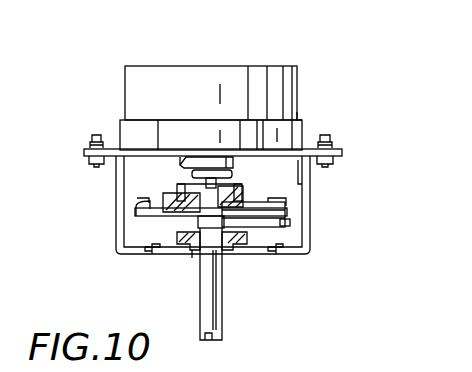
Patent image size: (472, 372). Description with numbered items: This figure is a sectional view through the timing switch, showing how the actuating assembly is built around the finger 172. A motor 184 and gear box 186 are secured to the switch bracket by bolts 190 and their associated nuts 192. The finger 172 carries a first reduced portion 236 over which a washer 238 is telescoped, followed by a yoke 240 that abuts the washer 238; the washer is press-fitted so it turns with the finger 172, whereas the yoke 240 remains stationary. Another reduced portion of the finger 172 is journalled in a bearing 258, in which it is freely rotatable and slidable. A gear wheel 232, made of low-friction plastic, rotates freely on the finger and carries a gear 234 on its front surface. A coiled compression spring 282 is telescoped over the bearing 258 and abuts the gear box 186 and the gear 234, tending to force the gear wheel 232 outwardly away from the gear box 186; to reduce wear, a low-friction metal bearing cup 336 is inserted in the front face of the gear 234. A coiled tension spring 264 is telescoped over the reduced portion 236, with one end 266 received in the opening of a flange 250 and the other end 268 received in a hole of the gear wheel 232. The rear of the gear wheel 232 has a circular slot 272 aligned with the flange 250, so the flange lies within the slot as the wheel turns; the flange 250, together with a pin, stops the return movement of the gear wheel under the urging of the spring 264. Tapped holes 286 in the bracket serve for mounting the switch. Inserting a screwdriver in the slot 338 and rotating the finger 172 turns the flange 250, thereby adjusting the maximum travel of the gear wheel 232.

The motor 184 is at (262, 42).
The gear box 186 is at (296, 119).
The nut 192 is at (91, 140).
The bolt 190 is at (94, 160).
The bearing 258 is at (209, 155).
The coiled compression spring 282 is at (183, 157).
The bearing cup 336 is at (233, 182).
The gear 234 is at (162, 192).
The gear wheel 232 is at (134, 209).
The flange 250 is at (286, 219).
The other end of tension spring 268 is at (290, 195).
The circular slot 272 is at (303, 208).
The end of tension spring 266 is at (286, 223).
The coiled tension spring 264 is at (197, 224).
The washer 238 is at (226, 254).
The yoke 240 is at (252, 252).
The first reduced portion 236 is at (192, 258).
The tapped holes 286 is at (152, 253).
The finger 172 is at (217, 308).
The slot 338 is at (207, 342).